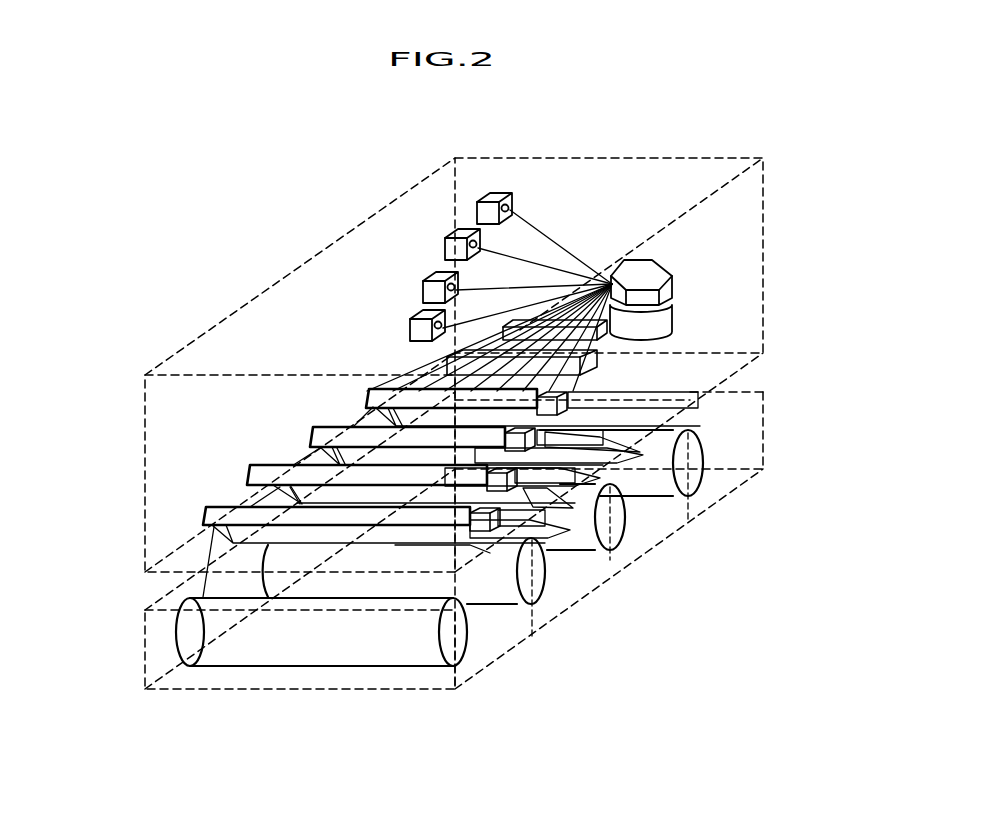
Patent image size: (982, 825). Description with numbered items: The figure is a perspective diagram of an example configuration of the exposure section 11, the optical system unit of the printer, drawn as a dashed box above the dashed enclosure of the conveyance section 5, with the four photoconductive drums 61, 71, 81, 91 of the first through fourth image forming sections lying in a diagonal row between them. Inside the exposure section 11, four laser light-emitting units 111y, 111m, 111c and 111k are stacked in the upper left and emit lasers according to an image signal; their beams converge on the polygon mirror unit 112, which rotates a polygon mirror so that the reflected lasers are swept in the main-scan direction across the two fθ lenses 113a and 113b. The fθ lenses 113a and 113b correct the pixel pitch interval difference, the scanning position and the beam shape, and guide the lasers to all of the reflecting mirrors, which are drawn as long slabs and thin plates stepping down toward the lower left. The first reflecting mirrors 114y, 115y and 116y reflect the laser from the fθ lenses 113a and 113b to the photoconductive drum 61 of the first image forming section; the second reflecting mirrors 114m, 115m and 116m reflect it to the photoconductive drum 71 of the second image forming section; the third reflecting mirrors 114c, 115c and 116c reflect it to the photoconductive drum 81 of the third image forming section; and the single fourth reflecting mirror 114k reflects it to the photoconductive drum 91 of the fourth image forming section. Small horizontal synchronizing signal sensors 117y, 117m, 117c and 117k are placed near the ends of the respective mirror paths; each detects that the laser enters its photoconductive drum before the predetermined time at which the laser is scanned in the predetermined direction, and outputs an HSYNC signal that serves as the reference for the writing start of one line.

The conveyance section 5 is at (145, 650).
The exposure section 11 is at (766, 172).
The photoconductive drum 61 is at (705, 476).
The photoconductive drum 71 is at (612, 549).
The photoconductive drum 81 is at (490, 607).
The photoconductive drum 91 is at (356, 667).
The laser light-emitting unit 111k is at (478, 212).
The laser light-emitting unit 111c is at (446, 250).
The laser light-emitting unit 111m is at (424, 291).
The laser light-emitting unit 111y is at (411, 328).
The polygon mirror unit 112 is at (673, 279).
The fθ lens 113a is at (603, 339).
The fθ lens 113b is at (598, 371).
The first reflecting mirror 114y is at (366, 397).
The second reflecting mirror 114m is at (310, 440).
The third reflecting mirror 114c is at (248, 475).
The fourth reflecting mirror 114k is at (203, 517).
The first reflecting mirror 115y is at (690, 432).
The second reflecting mirror 115m is at (567, 478).
The third reflecting mirror 115c is at (389, 545).
The first reflecting mirror 116y is at (693, 418).
The second reflecting mirror 116m is at (613, 453).
The third reflecting mirror 116c is at (535, 512).
The HSYNC sensor 117y is at (698, 398).
The HSYNC sensor 117m is at (520, 453).
The HSYNC sensor 117c is at (500, 495).
The HSYNC sensor 117k is at (483, 535).